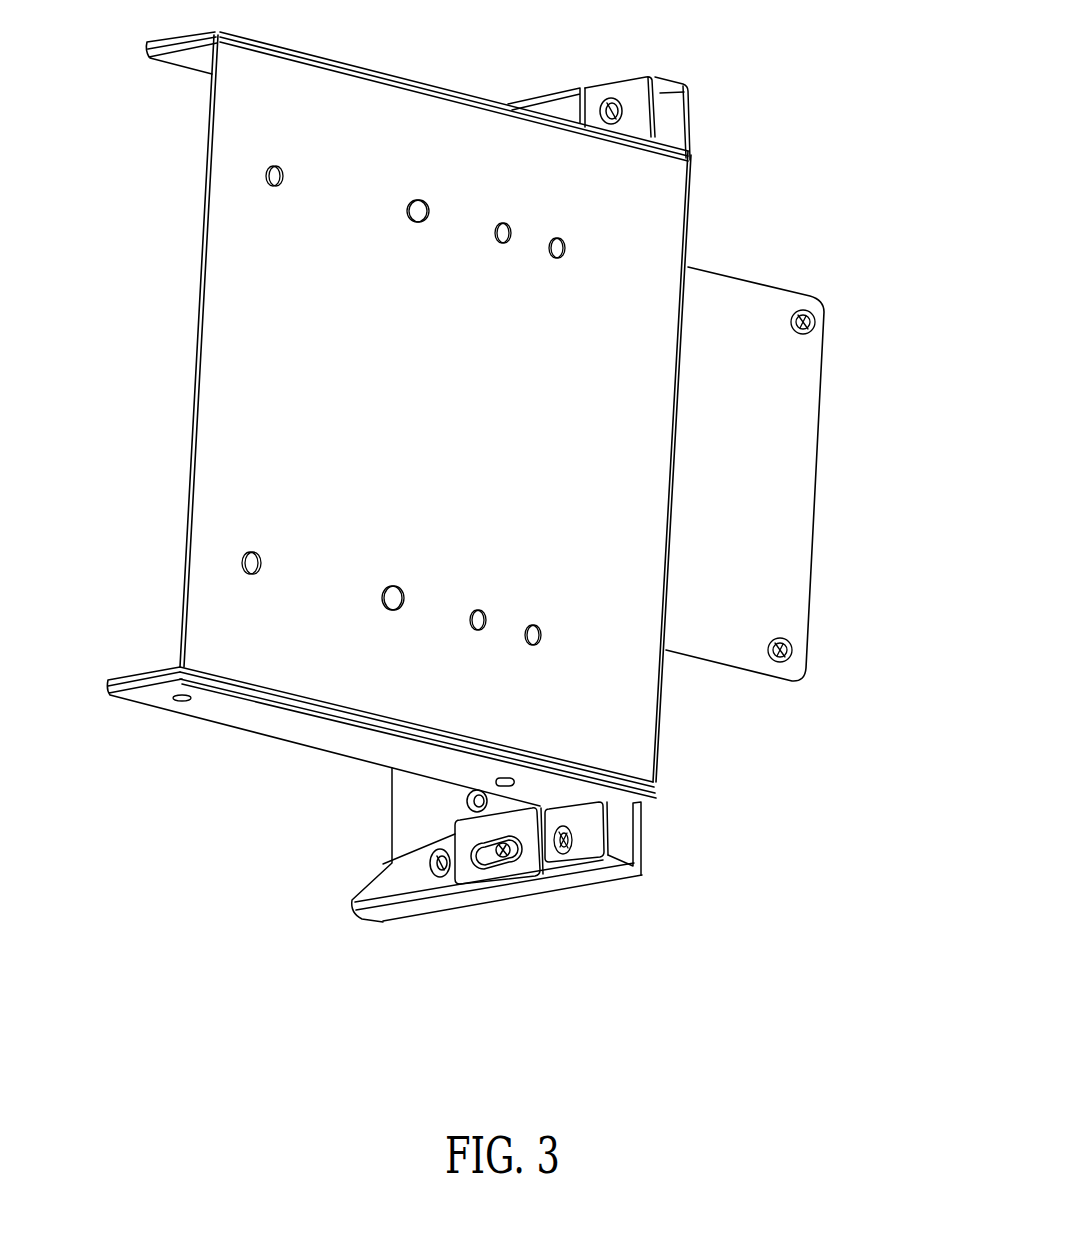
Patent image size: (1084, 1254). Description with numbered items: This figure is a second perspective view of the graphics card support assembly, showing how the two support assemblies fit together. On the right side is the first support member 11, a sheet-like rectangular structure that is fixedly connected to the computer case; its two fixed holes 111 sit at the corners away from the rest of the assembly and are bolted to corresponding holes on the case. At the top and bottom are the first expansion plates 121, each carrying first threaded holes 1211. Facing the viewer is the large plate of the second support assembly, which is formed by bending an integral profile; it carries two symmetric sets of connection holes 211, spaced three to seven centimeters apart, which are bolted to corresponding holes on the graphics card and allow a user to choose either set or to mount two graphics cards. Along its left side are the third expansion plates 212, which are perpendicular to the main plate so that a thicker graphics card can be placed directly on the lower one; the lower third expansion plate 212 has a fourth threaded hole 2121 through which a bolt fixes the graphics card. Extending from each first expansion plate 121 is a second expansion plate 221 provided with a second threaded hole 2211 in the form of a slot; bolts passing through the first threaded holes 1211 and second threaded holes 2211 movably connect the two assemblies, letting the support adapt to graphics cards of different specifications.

The first support member 11 is at (873, 478).
The fixed hole 111 is at (860, 325).
The first expansion plate 121 is at (845, 110).
The first threaded hole 1211 is at (658, 910).
The connection hole 211 is at (247, 553).
The third expansion plate 212 is at (147, 690).
The fourth threaded hole 2121 is at (183, 755).
The second expansion plate 221 is at (561, 104).
The second threaded hole 2211 is at (478, 935).